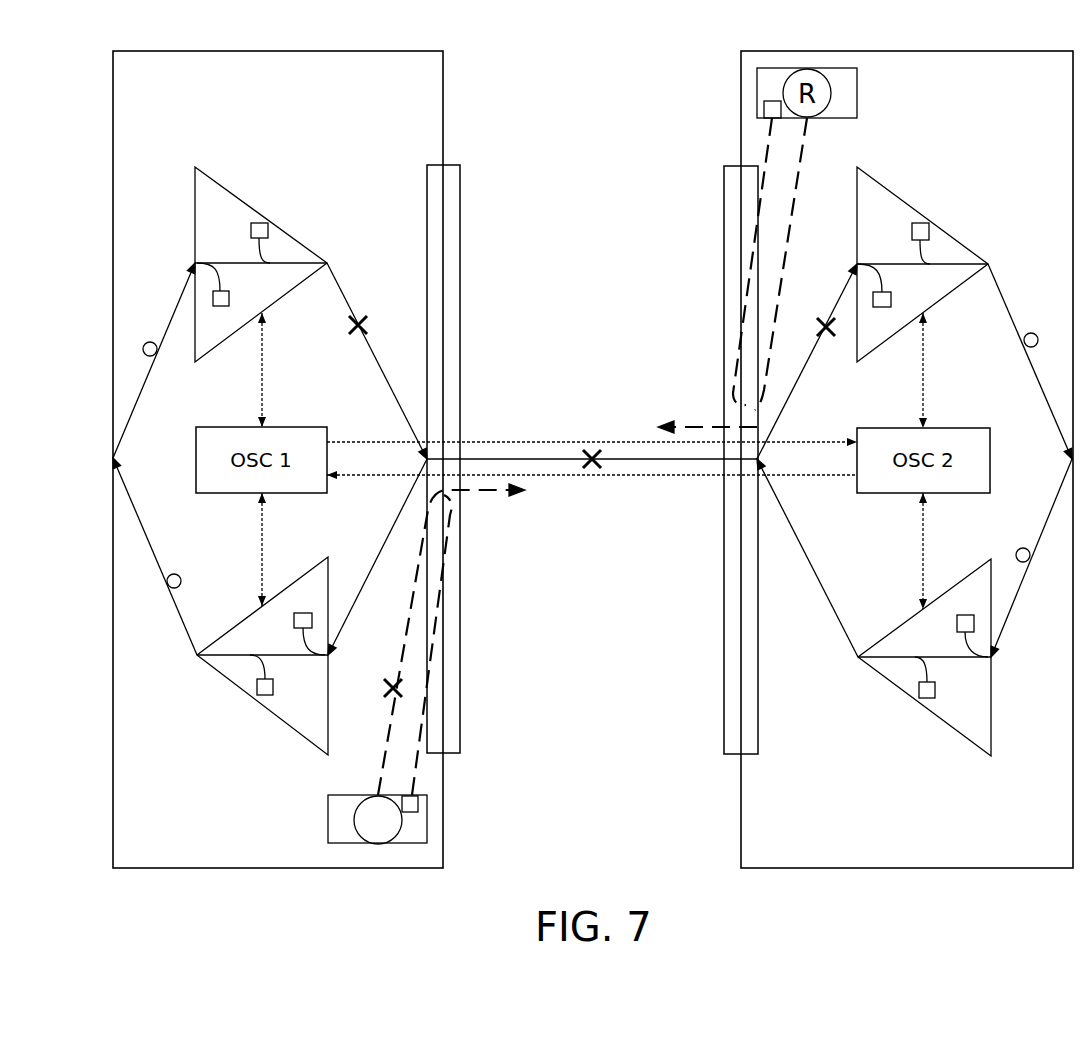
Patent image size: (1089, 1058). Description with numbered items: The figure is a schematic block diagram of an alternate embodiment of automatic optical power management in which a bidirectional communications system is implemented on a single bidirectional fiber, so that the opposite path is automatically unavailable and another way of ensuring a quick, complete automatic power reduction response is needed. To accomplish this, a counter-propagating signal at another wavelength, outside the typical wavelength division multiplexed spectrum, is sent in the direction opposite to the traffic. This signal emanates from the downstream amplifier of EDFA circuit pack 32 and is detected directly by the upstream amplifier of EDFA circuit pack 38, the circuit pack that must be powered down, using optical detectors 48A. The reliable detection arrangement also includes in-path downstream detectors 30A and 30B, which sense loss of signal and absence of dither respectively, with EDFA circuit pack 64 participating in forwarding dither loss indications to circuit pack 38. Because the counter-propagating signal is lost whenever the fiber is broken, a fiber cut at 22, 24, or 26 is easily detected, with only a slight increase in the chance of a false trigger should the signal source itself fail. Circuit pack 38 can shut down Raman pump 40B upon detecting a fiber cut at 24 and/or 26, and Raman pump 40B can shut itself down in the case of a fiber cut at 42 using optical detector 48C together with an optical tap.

The EDFA circuit pack 38 is at (228, 188).
The optical detector 48A is at (262, 232).
The fiber cut location 22 is at (359, 305).
The fiber cut location 24 is at (583, 436).
The fiber cut location 26 is at (834, 344).
The EDFA circuit pack 32 is at (948, 234).
The downstream detector 30A is at (891, 303).
The downstream detector 30B is at (300, 614).
The fiber cut location 42 is at (376, 671).
The EDFA circuit pack 64 is at (235, 688).
The Raman pump 40B is at (328, 808).
The optical detector 48C is at (418, 804).